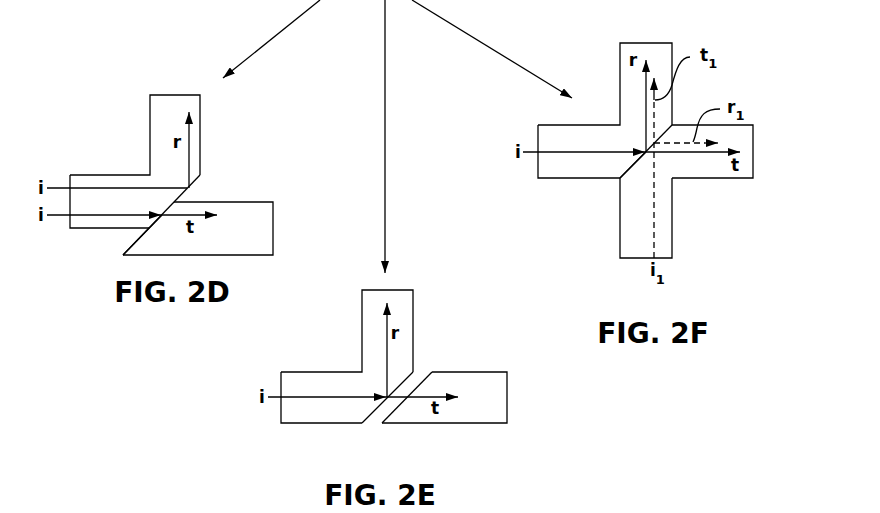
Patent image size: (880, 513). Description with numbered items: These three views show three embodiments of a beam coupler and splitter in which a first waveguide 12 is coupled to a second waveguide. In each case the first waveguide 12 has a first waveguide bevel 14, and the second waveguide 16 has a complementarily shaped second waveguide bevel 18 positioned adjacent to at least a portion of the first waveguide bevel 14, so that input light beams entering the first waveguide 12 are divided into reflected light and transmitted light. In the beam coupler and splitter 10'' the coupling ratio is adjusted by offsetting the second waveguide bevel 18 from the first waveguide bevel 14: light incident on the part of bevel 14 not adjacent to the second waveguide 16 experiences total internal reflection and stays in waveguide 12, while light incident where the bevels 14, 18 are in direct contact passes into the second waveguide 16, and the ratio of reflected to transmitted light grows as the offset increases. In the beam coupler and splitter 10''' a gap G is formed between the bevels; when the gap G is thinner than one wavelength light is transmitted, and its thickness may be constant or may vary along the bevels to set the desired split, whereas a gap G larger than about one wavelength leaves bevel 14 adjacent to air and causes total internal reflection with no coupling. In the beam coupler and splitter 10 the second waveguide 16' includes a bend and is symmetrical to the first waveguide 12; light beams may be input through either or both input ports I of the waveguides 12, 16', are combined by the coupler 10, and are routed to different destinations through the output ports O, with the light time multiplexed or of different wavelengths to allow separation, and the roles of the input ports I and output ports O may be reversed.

In FIG. 2F, the beam coupler and splitter 10 is at (759, 39).
In FIG. 2D, the beam coupler and splitter 10'' is at (291, 109).
In FIG. 2E, the beam coupler and splitter 10''' is at (539, 294).
In FIG. 2D, the first waveguide 12 is at (175, 103).
In FIG. 2E, the first waveguide 12 is at (307, 385).
In FIG. 2F, the first waveguide 12 is at (580, 137).
In FIG. 2D, the first waveguide bevel 14 is at (197, 182).
In FIG. 2E, the first waveguide bevel 14 is at (372, 420).
In FIG. 2F, the first waveguide bevel 14 is at (665, 133).
In FIG. 2D, the second waveguide 16 is at (225, 215).
In FIG. 2E, the second waveguide 16 is at (472, 392).
In FIG. 2F, the second waveguide 16 is at (712, 151).
In FIG. 2F, the second waveguide 16' is at (676, 213).
In FIG. 2D, the second waveguide bevel 18 is at (130, 250).
In FIG. 2E, the second waveguide bevel 18 is at (402, 406).
In FIG. 2F, the second waveguide bevel 18 is at (618, 168).
In FIG. 2E, the gap G is at (422, 374).
In FIG. 2F, the output ports O is at (648, 36).
In FIG. 2F, the input ports I is at (526, 170).